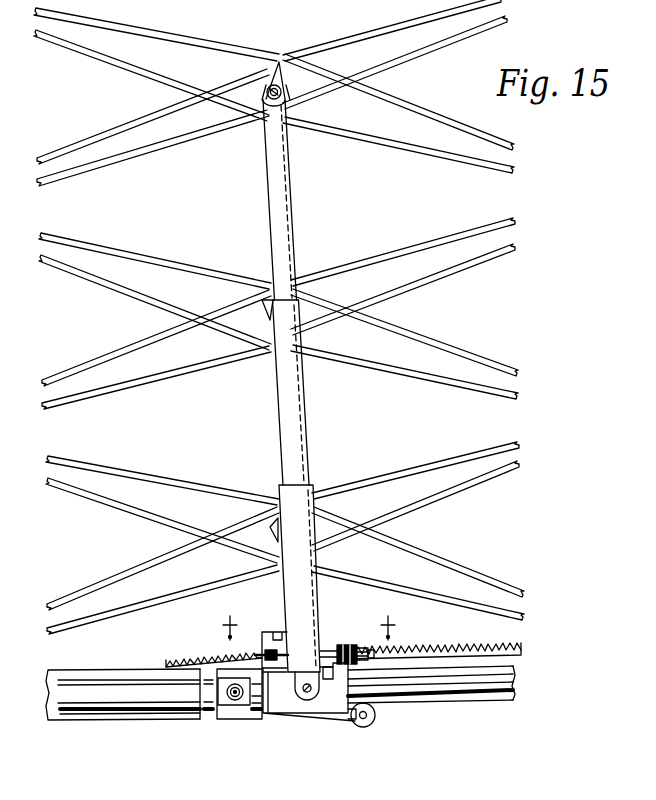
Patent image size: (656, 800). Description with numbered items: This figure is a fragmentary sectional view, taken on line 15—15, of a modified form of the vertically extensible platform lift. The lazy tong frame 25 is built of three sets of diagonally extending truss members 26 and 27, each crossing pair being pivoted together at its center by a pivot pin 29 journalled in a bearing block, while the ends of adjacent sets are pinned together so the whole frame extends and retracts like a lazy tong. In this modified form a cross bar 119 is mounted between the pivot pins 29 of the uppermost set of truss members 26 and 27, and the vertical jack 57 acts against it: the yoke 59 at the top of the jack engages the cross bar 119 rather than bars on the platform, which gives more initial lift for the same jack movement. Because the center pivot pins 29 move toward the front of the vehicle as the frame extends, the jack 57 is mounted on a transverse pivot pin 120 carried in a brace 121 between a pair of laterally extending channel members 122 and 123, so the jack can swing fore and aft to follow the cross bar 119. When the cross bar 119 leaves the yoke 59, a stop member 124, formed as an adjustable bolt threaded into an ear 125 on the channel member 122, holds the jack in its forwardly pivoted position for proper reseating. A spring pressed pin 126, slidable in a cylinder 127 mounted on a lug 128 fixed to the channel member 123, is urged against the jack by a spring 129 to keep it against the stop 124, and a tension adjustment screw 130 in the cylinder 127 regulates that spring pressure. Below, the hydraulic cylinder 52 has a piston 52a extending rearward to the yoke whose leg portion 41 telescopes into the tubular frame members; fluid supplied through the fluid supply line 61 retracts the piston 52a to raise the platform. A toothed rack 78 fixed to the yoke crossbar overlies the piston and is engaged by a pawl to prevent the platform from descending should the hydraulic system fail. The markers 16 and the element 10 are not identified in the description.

The rail 10 is at (137, 714).
The roller 15 is at (355, 721).
The center line marker 16 is at (311, 620).
The lazy tong frame 25 is at (431, 238).
The truss member 26 is at (110, 167).
The truss member 27 is at (431, 153).
The pivot pin 29 is at (318, 108).
The leg portion 41 is at (506, 700).
The hydraulic cylinder 52 is at (62, 700).
The piston 52a is at (480, 689).
The vertical jack 57 is at (318, 486).
The yoke 59 is at (248, 110).
The fluid supply line 61 is at (226, 692).
The rack 78 is at (462, 656).
The cross bar 119 is at (277, 86).
The transverse pivot pin 120 is at (305, 692).
The brace 121 is at (250, 710).
The channel member 122 is at (265, 716).
The channel member 123 is at (350, 715).
The stop member 124 is at (258, 653).
The ear 125 is at (270, 647).
The spring pressed pin 126 is at (328, 679).
The cylinder 127 is at (342, 643).
The lug 128 is at (322, 650).
The spring 129 is at (350, 645).
The tension adjustment screw 130 is at (373, 653).